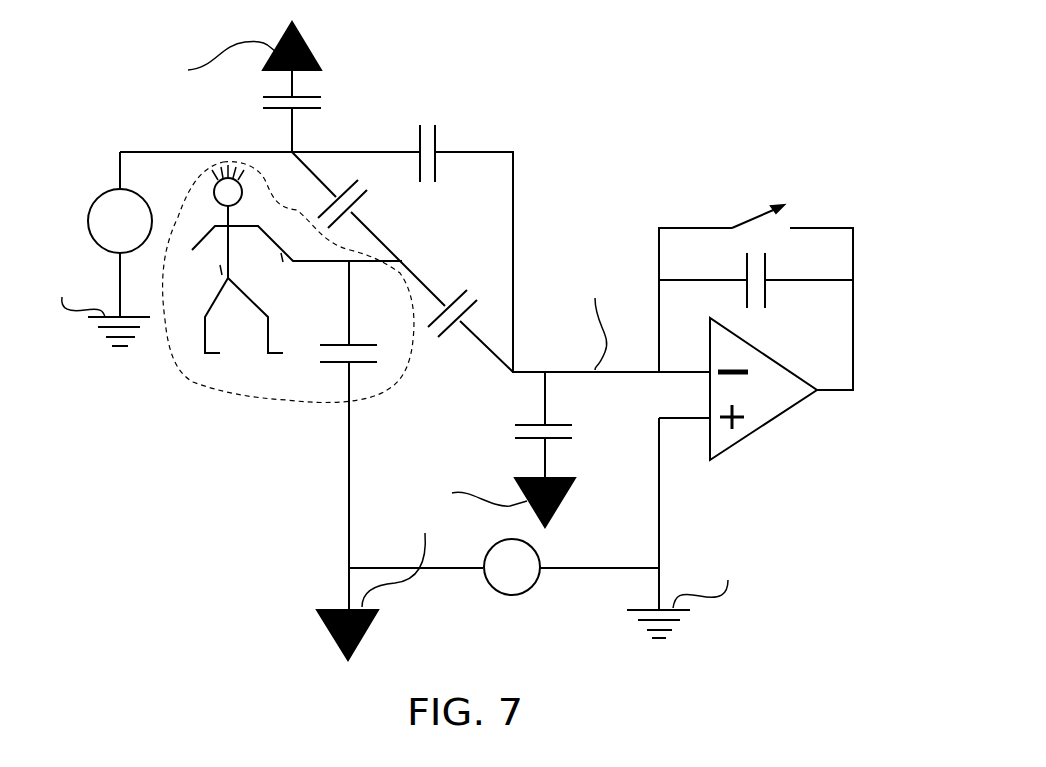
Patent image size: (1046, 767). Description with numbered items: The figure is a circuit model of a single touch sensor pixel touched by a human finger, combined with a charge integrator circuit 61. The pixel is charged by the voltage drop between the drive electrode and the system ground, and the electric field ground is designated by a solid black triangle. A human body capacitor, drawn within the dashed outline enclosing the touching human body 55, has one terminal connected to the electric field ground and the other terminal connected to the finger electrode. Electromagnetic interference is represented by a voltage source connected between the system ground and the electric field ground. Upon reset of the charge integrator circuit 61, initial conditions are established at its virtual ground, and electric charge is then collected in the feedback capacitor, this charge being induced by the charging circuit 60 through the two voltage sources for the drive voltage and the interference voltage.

The user body model 55 is at (195, 378).
The charging circuit 60 is at (680, 119).
The charge integrator circuit 61 is at (785, 437).